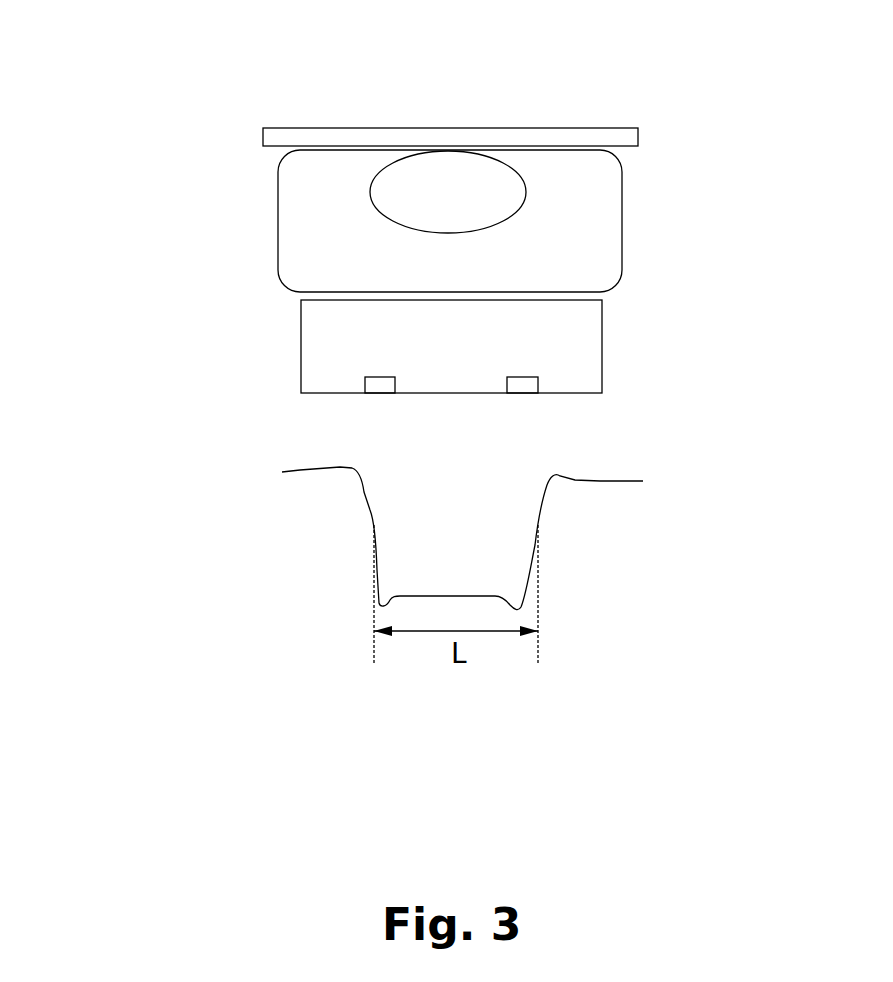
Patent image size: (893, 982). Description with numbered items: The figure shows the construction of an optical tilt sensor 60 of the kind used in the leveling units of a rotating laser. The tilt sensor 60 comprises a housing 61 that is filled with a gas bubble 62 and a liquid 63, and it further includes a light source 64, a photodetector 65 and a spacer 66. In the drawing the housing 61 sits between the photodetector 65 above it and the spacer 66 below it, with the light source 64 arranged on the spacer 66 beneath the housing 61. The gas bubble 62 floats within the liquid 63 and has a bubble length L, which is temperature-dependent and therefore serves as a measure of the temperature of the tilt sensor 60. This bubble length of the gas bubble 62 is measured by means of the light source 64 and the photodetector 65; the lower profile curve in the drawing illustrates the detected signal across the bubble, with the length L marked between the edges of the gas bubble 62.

The tilt sensor 60 is at (187, 196).
The housing 61 is at (622, 220).
The gas bubble 62 is at (462, 209).
The liquid 63 is at (556, 280).
The light source 64 is at (388, 387).
The photodetector 65 is at (430, 138).
The spacer 66 is at (603, 350).